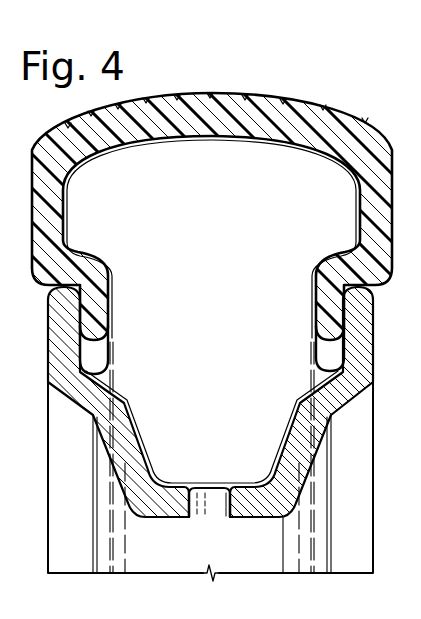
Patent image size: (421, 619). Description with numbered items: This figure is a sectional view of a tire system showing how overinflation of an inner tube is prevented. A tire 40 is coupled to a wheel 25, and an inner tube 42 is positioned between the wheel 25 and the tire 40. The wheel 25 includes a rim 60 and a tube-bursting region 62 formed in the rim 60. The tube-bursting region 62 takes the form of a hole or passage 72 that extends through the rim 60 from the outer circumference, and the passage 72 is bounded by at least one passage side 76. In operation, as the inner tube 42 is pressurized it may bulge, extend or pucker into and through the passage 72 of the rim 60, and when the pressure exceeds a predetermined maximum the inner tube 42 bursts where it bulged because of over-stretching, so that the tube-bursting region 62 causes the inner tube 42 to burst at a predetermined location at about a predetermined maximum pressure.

The tire 40 is at (190, 97).
The inner tube 42 is at (97, 183).
The rim 60 is at (65, 326).
The wheel 25 is at (63, 522).
The passage 72 is at (196, 512).
The passage side 76 is at (224, 498).
The tube-bursting region 62 is at (221, 523).